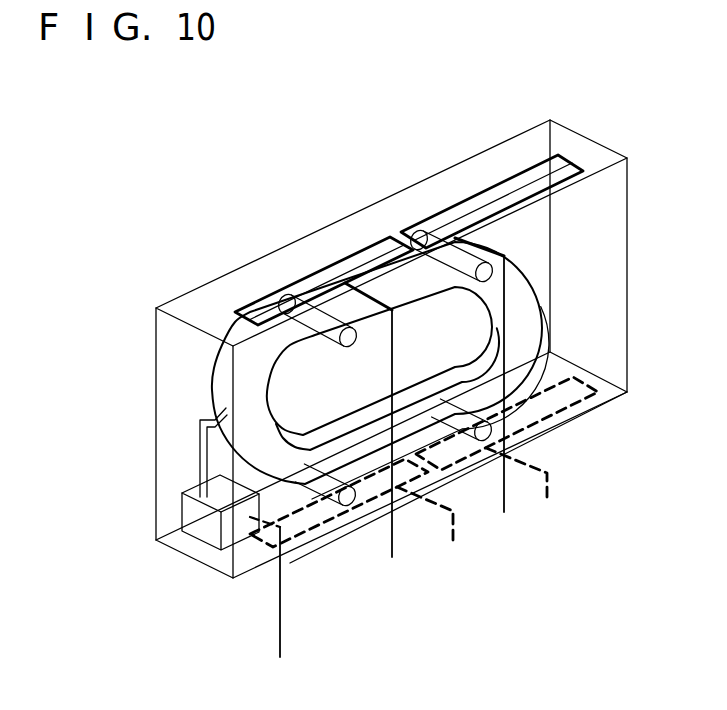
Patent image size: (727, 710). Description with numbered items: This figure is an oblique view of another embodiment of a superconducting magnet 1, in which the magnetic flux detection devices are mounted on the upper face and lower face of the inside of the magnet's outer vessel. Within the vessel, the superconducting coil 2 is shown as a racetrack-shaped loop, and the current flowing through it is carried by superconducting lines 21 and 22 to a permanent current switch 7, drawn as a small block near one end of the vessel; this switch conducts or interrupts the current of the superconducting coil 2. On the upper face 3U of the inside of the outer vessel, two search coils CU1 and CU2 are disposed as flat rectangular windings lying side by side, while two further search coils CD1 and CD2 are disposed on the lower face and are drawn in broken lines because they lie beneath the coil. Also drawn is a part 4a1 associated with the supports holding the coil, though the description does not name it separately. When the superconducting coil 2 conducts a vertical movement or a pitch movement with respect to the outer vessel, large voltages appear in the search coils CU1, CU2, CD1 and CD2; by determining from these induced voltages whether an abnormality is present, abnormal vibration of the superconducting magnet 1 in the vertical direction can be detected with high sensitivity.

The superconducting magnet 1 is at (482, 172).
The superconducting coil 2 is at (222, 370).
The upper face 3U is at (592, 153).
The terminal pin 4a1 is at (278, 305).
The permanent current switch 7 is at (192, 517).
The superconducting line 21 is at (202, 438).
The superconducting line 22 is at (207, 473).
The search coil CU1 is at (342, 257).
The search coil CU2 is at (433, 213).
The search coil CD1 is at (350, 537).
The search coil CD2 is at (533, 442).